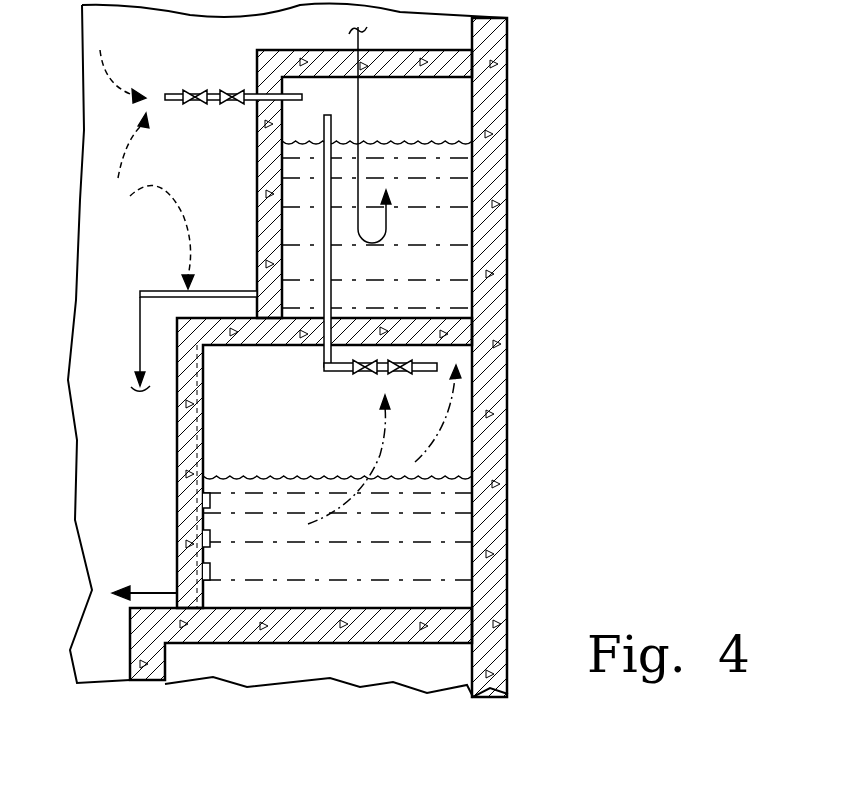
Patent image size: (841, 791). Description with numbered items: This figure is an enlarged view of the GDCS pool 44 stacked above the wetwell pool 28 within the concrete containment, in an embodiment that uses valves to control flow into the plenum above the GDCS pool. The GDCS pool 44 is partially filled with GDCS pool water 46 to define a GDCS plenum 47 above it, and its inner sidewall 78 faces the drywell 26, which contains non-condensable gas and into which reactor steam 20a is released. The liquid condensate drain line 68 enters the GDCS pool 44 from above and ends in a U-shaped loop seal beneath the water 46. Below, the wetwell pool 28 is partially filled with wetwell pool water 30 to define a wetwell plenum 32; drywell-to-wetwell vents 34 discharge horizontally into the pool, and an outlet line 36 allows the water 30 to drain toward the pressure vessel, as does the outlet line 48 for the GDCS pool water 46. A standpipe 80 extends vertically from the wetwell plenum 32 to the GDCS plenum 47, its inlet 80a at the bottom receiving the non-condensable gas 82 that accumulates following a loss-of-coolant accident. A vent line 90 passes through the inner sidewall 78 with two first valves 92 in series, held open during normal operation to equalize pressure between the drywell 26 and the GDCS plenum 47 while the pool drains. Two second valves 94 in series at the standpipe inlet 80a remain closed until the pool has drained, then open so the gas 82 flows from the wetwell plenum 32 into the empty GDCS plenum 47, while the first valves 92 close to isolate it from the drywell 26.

The reactor steam 20a is at (155, 206).
The drywell 26 is at (193, 186).
The wetwell pool 28 is at (462, 576).
The wetwell pool water 30 is at (243, 476).
The wetwell plenum 32 is at (248, 416).
The drywell-to-wetwell vents 34 is at (177, 477).
The outlet line 36 is at (157, 590).
The GDCS pool 44 is at (472, 229).
The GDCS pool water 46 is at (424, 141).
The GDCS plenum 47 is at (408, 114).
The outlet line 48 is at (140, 353).
The liquid condensate drain line 68 is at (367, 33).
The inner sidewall 78 is at (257, 156).
The standpipe 80 is at (332, 270).
The standpipe inlet 80a is at (324, 368).
The non-condensable gas 82 is at (382, 452).
The vent line 90 is at (255, 90).
The first valves 92 is at (231, 88).
The second valves 94 is at (401, 378).